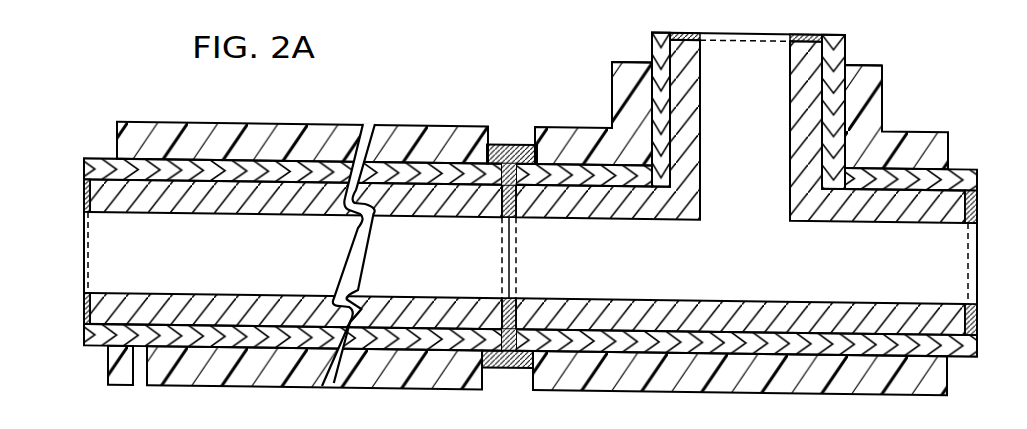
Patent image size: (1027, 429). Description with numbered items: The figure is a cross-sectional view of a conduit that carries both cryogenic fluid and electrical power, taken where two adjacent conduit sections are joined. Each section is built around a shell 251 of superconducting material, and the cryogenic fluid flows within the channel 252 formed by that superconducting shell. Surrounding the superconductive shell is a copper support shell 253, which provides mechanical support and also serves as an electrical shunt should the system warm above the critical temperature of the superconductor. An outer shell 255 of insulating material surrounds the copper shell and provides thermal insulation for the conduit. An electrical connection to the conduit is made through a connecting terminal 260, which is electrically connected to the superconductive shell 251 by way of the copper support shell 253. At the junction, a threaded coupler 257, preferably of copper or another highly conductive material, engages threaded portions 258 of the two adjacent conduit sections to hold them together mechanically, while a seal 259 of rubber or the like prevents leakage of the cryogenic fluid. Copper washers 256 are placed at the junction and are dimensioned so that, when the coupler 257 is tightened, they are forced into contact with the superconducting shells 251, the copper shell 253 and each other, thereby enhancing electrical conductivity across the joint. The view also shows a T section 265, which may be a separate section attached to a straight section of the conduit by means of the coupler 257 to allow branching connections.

The shell 251 is at (255, 213).
The channel 252 is at (100, 232).
The copper support shell 253 is at (295, 160).
The outer shell 255 is at (170, 122).
The copper washers 256 is at (83, 310).
The threaded coupler 257 is at (497, 160).
The threaded portions 258 is at (502, 168).
The seal 259 is at (513, 163).
The connecting terminal 260 is at (145, 347).
The T section 265 is at (645, 50).